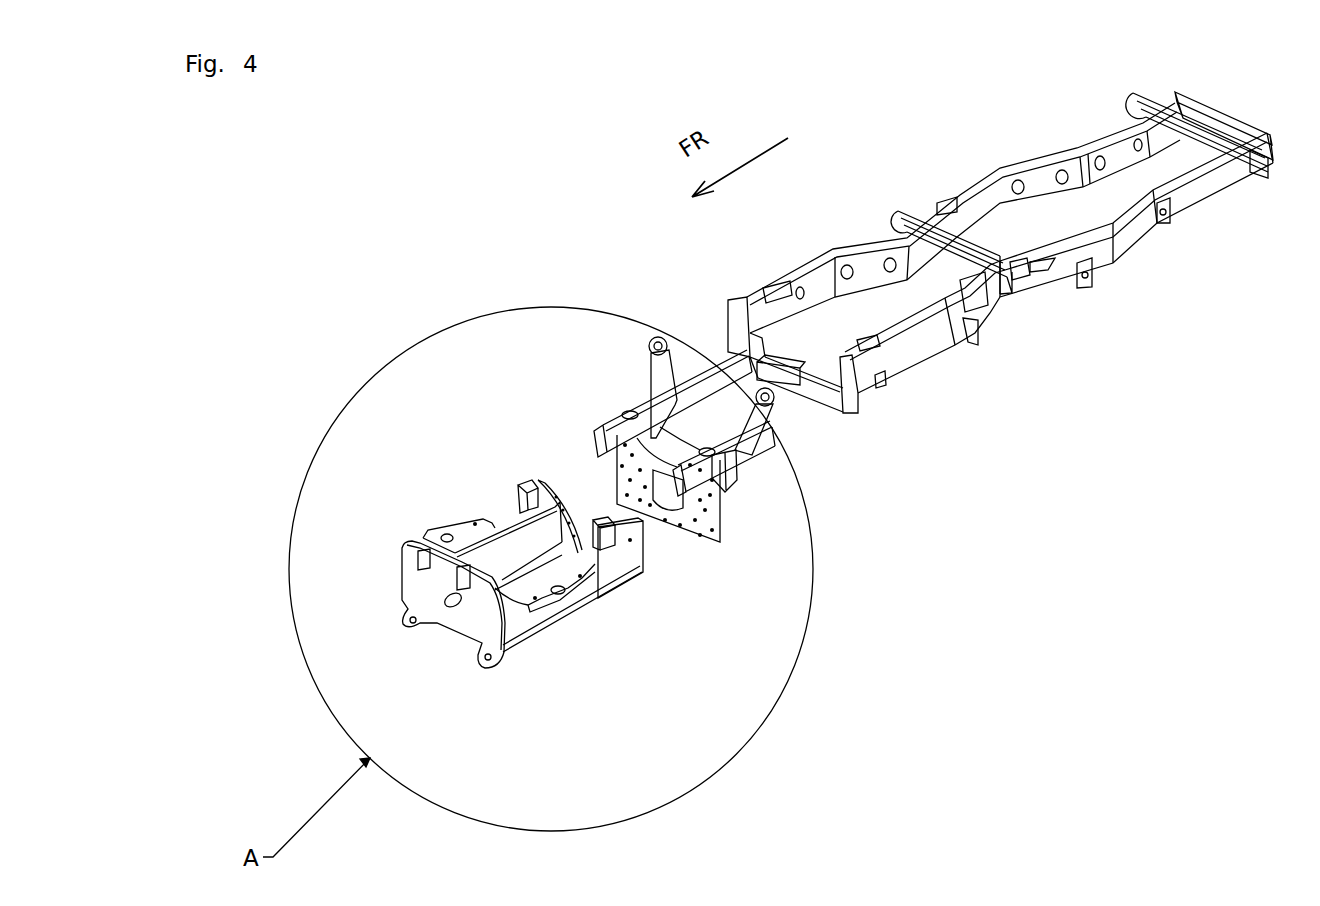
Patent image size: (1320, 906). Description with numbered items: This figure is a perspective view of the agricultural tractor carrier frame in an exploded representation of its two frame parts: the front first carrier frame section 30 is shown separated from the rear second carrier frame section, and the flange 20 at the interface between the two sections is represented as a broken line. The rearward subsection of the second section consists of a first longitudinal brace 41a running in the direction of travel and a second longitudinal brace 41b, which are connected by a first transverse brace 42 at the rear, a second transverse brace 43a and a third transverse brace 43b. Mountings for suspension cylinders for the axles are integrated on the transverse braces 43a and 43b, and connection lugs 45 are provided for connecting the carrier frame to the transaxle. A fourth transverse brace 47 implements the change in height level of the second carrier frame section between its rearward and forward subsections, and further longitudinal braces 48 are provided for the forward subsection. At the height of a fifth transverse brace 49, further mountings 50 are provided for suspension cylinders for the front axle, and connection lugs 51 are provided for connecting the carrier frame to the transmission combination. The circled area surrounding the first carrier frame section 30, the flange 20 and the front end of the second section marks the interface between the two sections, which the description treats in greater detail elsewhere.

The flange 20 is at (705, 535).
The first carrier frame section 30 is at (482, 500).
The first longitudinal brace 41a is at (910, 353).
The second longitudinal brace 41b is at (865, 262).
The first transverse brace 42 is at (1233, 120).
The second transverse brace 43a is at (1190, 127).
The third transverse brace 43b is at (970, 250).
The connection lugs 45 is at (968, 345).
The fourth transverse brace 47 is at (735, 365).
The further longitudinal braces 48 is at (722, 385).
The fifth transverse brace 49 is at (737, 440).
The mountings 50 is at (647, 349).
The connection lugs 51 is at (723, 475).